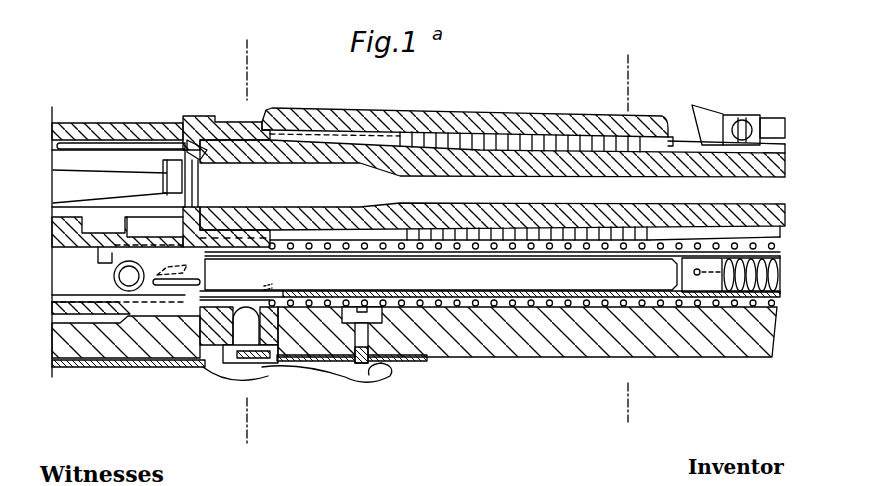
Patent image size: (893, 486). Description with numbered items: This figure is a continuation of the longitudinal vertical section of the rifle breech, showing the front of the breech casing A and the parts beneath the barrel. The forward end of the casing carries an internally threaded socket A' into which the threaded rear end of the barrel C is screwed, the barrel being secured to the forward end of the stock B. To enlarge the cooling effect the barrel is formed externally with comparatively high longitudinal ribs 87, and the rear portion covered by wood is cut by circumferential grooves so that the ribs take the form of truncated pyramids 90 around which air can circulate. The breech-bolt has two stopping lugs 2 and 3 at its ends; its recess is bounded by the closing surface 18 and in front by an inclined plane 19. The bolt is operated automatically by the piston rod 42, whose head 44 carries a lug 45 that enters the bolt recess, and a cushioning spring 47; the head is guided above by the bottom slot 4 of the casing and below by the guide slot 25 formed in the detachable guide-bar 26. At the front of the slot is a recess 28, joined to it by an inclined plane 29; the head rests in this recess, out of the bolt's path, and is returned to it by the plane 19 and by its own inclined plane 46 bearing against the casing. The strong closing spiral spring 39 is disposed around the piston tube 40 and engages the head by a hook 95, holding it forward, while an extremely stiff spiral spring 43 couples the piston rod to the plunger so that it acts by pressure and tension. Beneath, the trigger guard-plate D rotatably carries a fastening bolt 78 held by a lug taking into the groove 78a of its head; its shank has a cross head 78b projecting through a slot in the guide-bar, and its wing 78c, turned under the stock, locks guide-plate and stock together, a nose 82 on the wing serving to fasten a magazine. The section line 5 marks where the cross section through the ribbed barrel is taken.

The breech casing A is at (114, 109).
The internally threaded socket A' is at (226, 168).
The stock B is at (760, 345).
The barrel C is at (688, 150).
The trigger guard-plate D is at (102, 370).
The stopping lug 2 is at (117, 230).
The rear stopping lug 3 is at (375, 300).
The bottom slot 4 is at (253, 246).
The section line 5- 5 is at (636, 236).
The closing surface 18 is at (93, 200).
The inclined plane 19 is at (170, 178).
The guide slot 25 is at (128, 373).
The detachable guide-bar 26 is at (193, 375).
The recess 28 is at (147, 320).
The inclined plane 29 is at (120, 330).
The closing spiral spring 39 is at (573, 307).
The piston tube 40 is at (530, 307).
The piston rod 42 is at (492, 267).
The spiral spring 43 is at (762, 275).
The piston-rod head 44 is at (150, 243).
The lug 45 is at (140, 222).
The inclined plane 46 is at (187, 280).
The spring 47 is at (100, 263).
The bolt 78 is at (239, 327).
The groove 78a is at (252, 357).
The cross head 78b is at (257, 281).
The wing 78c is at (350, 379).
The nose 82 is at (187, 350).
The longitudinal ribs 87 is at (710, 227).
The truncated pyramids 90 is at (520, 133).
The hook 95 is at (178, 325).